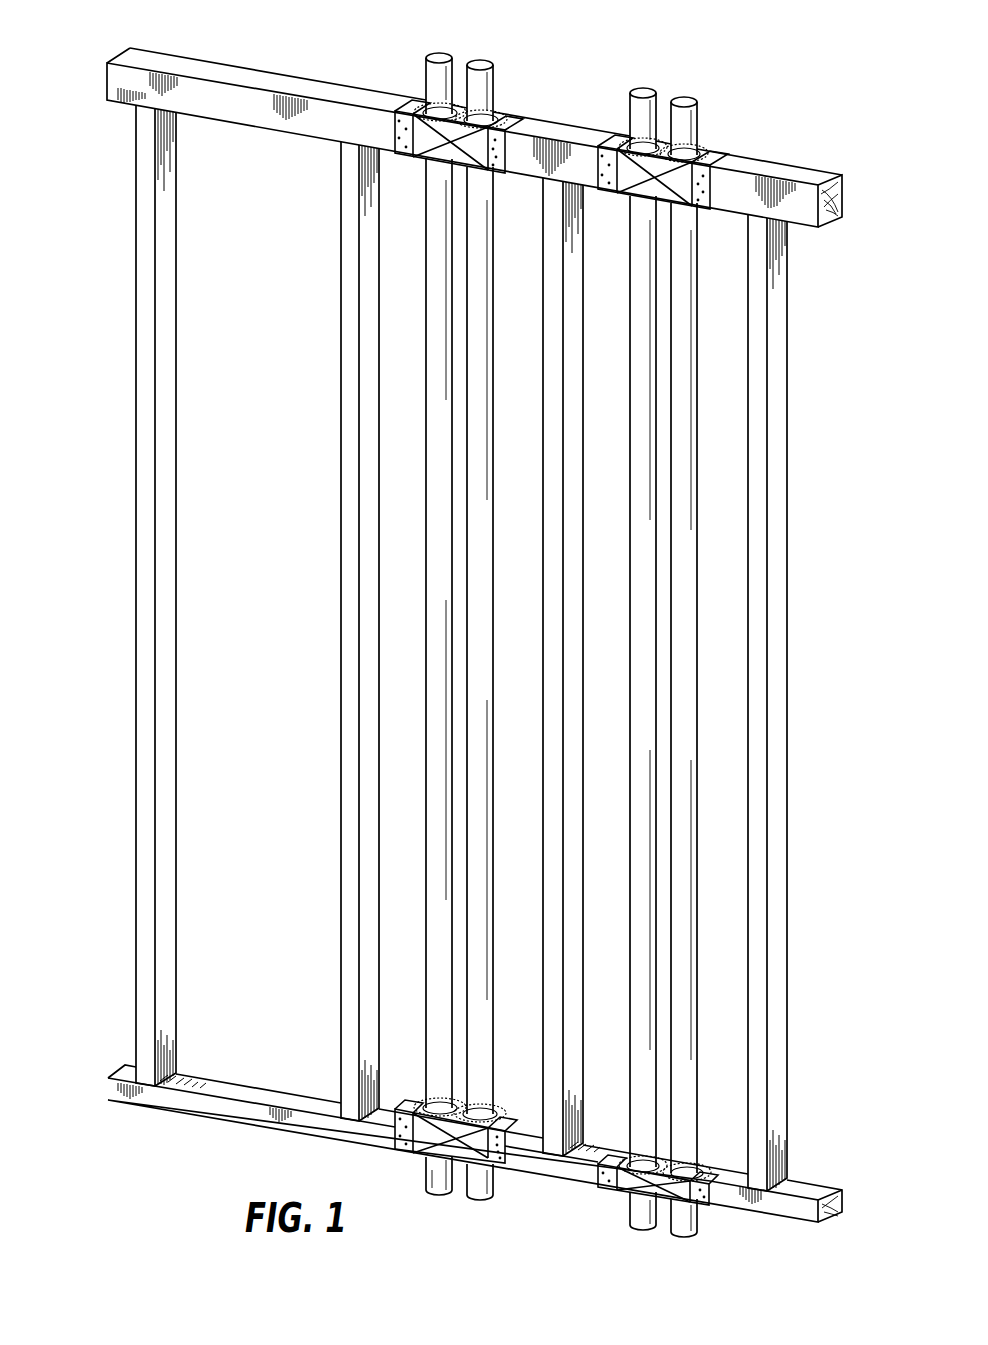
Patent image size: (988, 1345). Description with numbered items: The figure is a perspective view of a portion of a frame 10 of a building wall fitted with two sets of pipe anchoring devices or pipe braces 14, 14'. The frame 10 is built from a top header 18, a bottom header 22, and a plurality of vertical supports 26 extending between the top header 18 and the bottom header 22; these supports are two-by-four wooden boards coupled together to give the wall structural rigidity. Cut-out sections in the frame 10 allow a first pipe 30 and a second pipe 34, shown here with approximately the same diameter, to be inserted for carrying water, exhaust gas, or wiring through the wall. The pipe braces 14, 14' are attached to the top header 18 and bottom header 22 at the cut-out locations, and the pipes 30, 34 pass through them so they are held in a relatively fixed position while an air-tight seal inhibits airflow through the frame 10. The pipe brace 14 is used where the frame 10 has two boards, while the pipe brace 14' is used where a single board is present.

The frame 10 is at (94, 41).
The pipe brace 14 is at (585, 648).
The pipe brace 14' is at (669, 1225).
The top header 18 is at (800, 173).
The bottom header 22 is at (195, 1103).
The vertical supports 26 is at (573, 330).
The first pipe 30 is at (430, 67).
The second pipe 34 is at (488, 70).